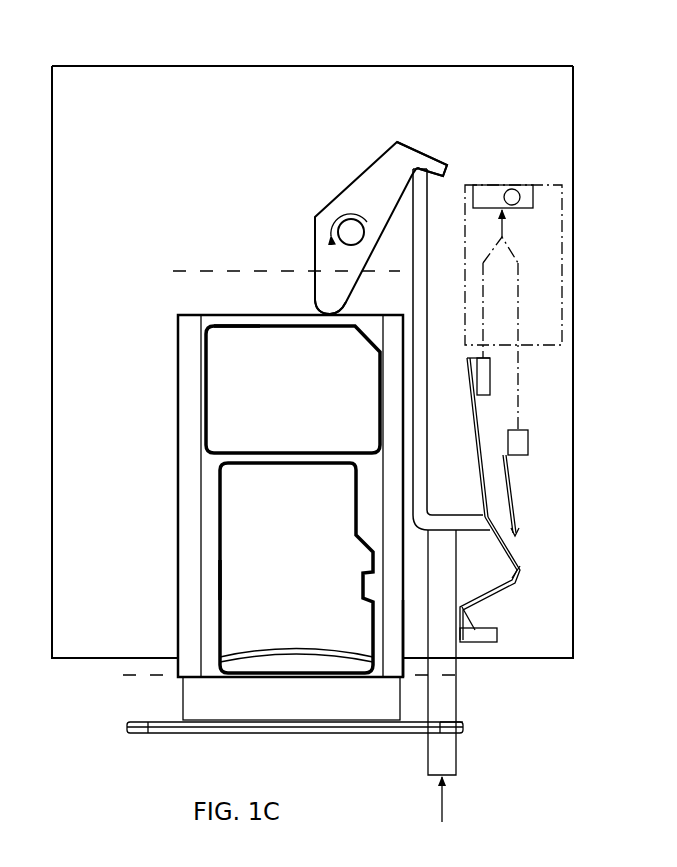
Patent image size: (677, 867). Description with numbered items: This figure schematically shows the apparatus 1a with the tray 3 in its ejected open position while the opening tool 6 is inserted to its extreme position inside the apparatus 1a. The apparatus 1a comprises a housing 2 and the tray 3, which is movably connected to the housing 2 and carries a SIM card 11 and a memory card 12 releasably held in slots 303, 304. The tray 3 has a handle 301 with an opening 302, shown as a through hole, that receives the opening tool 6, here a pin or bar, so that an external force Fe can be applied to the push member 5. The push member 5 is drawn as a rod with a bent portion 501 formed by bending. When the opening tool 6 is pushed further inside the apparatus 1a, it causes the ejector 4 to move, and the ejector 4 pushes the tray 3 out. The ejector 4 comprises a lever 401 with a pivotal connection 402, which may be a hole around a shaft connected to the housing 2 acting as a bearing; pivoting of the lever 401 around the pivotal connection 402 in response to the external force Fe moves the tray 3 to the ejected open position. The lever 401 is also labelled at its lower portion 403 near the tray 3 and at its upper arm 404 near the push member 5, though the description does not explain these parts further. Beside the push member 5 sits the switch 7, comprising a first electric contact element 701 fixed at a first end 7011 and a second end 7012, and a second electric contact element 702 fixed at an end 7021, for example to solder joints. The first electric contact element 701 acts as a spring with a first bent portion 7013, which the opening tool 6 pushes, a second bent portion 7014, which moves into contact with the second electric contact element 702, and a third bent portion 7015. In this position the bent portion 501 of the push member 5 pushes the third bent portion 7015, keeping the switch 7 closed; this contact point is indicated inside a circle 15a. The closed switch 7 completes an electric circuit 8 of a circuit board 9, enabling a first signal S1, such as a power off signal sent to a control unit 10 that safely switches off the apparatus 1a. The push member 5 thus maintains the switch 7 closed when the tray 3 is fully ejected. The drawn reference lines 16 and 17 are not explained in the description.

The apparatus 1a is at (208, 60).
The housing 2 is at (573, 78).
The tray 3 is at (162, 283).
The ejector 4 is at (343, 183).
The push member 5 is at (428, 326).
The opening tool 6 is at (462, 682).
The switch 7 is at (528, 470).
The electric circuit 8 is at (518, 307).
The circuit board 9 is at (473, 185).
The control unit 10 is at (513, 194).
The SIM card 11 is at (263, 335).
The memory card 12 is at (253, 470).
The card holder 16 is at (200, 270).
The base plane 17 is at (137, 672).
The handle 301 is at (127, 722).
The opening 302 is at (463, 726).
The slot 303 is at (240, 327).
The slot 304 is at (217, 580).
The lever 401 is at (316, 216).
The pivotal connection 402 is at (352, 232).
The lever tip 403 is at (300, 312).
The lever arm 404 is at (415, 160).
The bent portion 501 is at (413, 600).
The first electric contact element 701 is at (477, 412).
The second electric contact element 702 is at (517, 515).
The first end 7011 is at (490, 355).
The second end 7012 is at (497, 634).
The first bent portion 7013 is at (462, 610).
The second bent portion 7014 is at (517, 585).
The third bent portion 7015 is at (523, 560).
The end 7021 is at (528, 441).
The circle 15a is at (517, 537).
The first signal S1 is at (520, 224).
The external force Fe is at (441, 814).